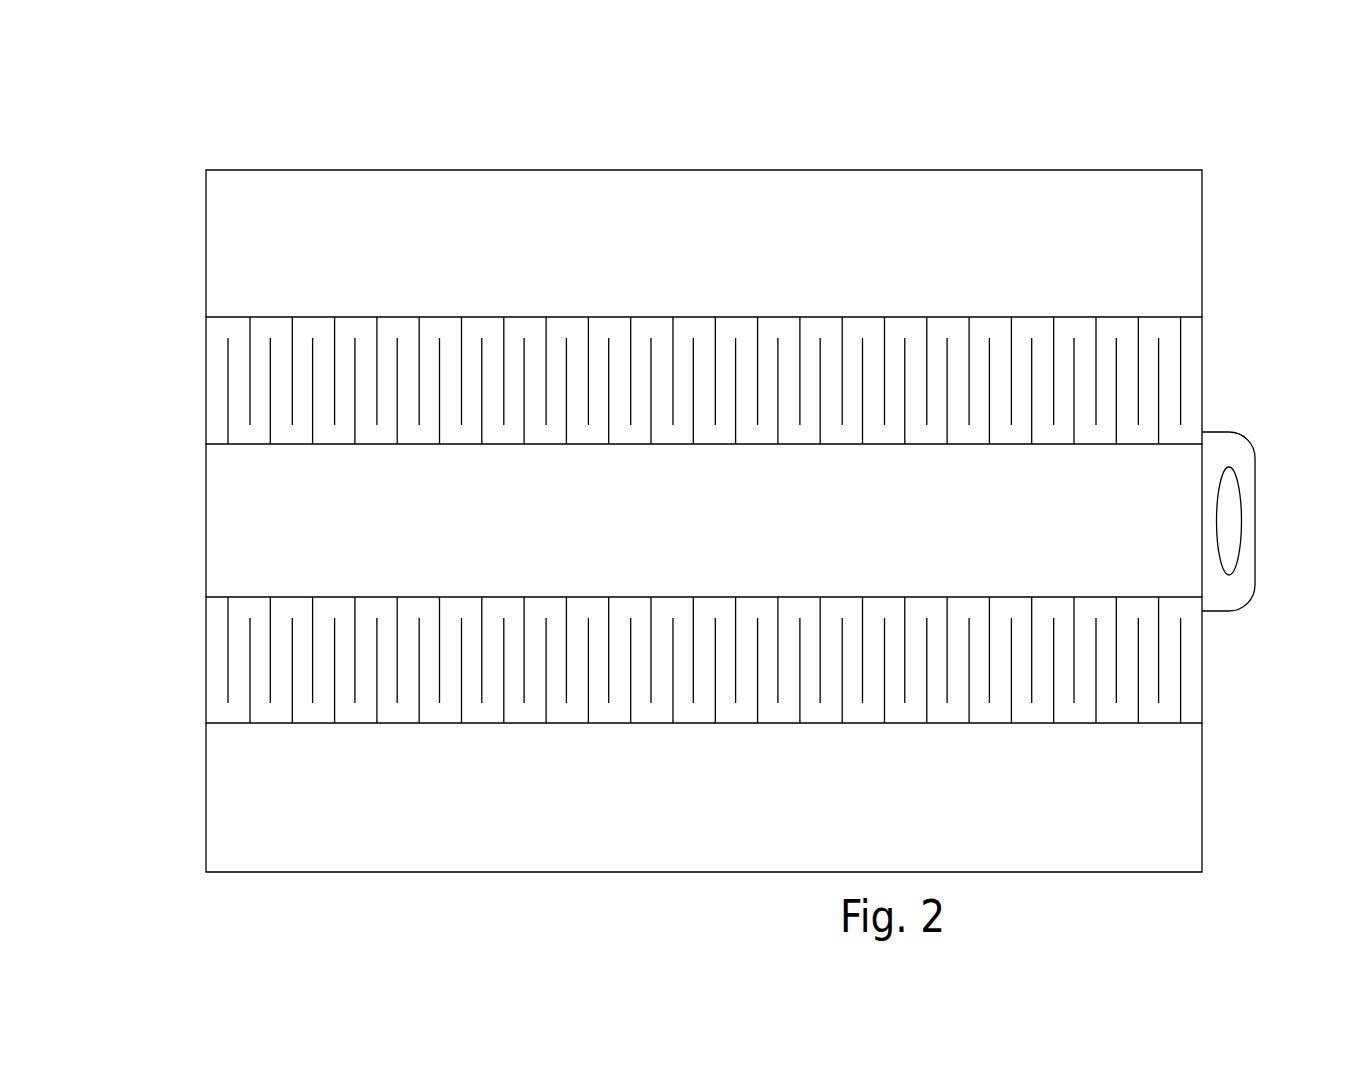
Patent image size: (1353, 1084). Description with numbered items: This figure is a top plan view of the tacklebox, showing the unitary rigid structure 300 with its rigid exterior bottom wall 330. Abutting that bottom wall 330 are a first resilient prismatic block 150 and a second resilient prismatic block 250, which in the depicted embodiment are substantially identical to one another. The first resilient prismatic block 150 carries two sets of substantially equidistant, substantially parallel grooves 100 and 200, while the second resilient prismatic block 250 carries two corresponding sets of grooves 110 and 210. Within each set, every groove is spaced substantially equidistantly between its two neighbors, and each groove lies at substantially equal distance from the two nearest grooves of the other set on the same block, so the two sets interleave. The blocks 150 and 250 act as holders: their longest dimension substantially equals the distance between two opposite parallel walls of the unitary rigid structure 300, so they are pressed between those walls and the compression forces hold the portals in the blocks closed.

The grooves 100 is at (1159, 444).
The grooves 110 is at (673, 723).
The first resilient prismatic block 150 is at (772, 309).
The grooves 200 is at (420, 317).
The grooves 210 is at (441, 597).
The second resilient prismatic block 250 is at (775, 700).
The unitary rigid structure 300 is at (225, 530).
The rigid exterior bottom wall 330 is at (1168, 232).